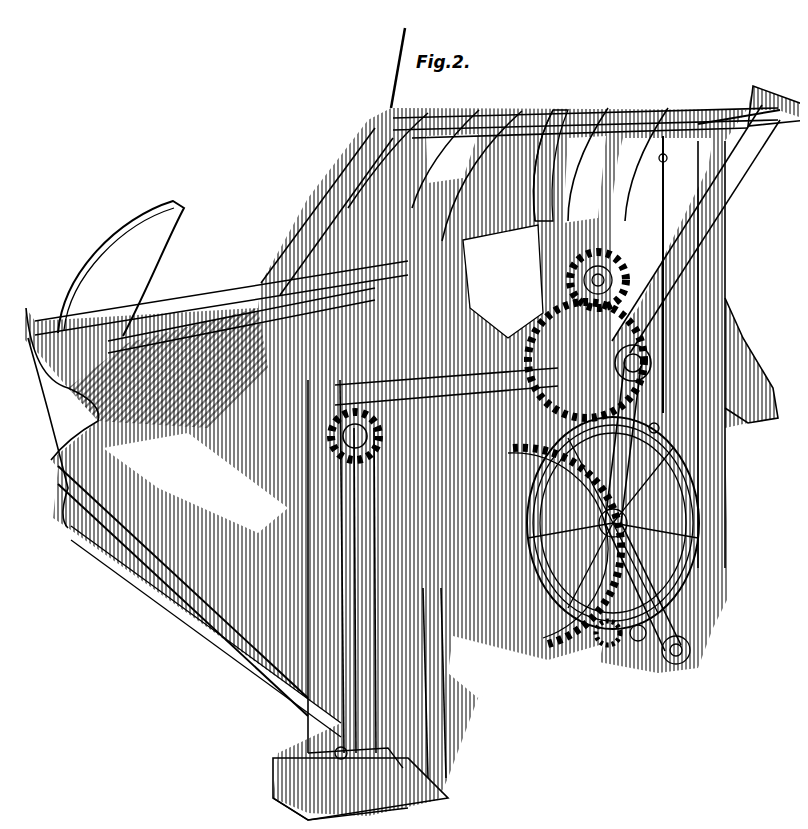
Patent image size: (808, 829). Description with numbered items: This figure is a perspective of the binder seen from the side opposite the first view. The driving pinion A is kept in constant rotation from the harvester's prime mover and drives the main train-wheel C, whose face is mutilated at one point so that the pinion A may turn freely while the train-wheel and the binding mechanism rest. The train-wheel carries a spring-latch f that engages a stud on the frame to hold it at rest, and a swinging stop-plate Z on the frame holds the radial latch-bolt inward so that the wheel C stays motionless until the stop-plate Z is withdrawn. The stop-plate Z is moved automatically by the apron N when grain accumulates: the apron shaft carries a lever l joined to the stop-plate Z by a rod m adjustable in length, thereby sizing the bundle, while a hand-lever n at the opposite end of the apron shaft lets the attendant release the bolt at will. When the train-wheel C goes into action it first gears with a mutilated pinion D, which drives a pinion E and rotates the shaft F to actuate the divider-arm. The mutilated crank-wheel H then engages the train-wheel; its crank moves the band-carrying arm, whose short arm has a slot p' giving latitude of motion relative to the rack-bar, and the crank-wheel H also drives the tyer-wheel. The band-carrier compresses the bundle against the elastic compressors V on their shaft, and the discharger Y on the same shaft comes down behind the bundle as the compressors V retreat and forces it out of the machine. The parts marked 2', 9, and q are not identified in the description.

The hand-lever n is at (390, 68).
The lever l is at (688, 114).
The rod m is at (654, 274).
The apron N is at (550, 174).
The pinion E is at (600, 255).
The shaft F is at (503, 281).
The pinion D is at (636, 333).
The spring-latch f is at (648, 418).
The discharger Y is at (121, 268).
The elastic compressors V is at (199, 586).
The main train-wheel C is at (690, 558).
The stop-plate Z is at (680, 576).
The crank-wheel H is at (564, 549).
The pinion 2' is at (601, 661).
The pin 9 is at (630, 640).
The pinion A is at (663, 660).
The slot p' is at (355, 755).
The base plate q is at (340, 802).